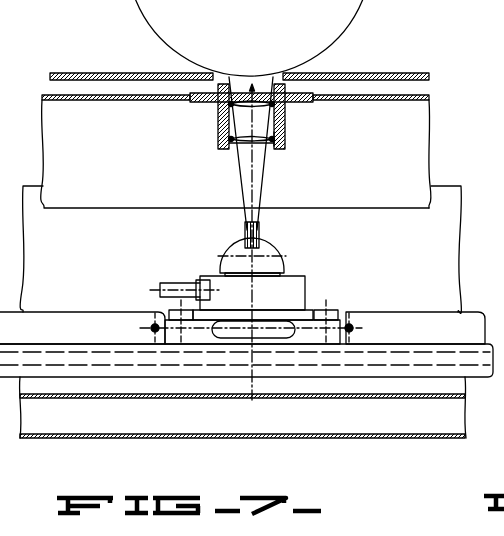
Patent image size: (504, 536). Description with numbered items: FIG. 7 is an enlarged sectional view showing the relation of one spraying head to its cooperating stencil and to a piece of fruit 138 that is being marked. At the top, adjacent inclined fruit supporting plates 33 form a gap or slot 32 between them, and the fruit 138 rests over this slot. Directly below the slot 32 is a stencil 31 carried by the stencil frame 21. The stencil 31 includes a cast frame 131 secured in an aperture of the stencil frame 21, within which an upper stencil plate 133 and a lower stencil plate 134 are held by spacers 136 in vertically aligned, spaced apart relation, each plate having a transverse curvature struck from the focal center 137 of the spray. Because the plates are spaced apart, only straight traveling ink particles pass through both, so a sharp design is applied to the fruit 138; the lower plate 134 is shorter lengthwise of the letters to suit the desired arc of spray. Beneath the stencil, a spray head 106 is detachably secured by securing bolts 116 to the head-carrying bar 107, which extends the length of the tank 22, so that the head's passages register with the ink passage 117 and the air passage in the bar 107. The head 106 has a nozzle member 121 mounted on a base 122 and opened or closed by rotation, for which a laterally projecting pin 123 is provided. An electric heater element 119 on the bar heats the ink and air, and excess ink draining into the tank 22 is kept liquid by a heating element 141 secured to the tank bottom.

The fruit 138 is at (143, 15).
The fruit supporting plates 33 is at (92, 74).
The slot 32 is at (279, 73).
The stencil 31 is at (200, 108).
The stencil frame 21 is at (437, 176).
The cast frame 131 is at (286, 118).
The upper stencil plate 133 is at (233, 105).
The lower stencil plate 134 is at (231, 138).
The spacers 136 is at (284, 136).
The tank 22 is at (453, 273).
The focal center 137 is at (248, 242).
The nozzle member 121 is at (271, 248).
The spray head 106 is at (295, 264).
The base 122 is at (306, 317).
The laterally projecting pin 123 is at (176, 280).
The securing bolts 116 is at (166, 313).
The electric heater element 119 is at (59, 300).
The head-carrying bar 107 is at (97, 353).
The ink passage 117 is at (245, 390).
The heating element 141 is at (315, 419).